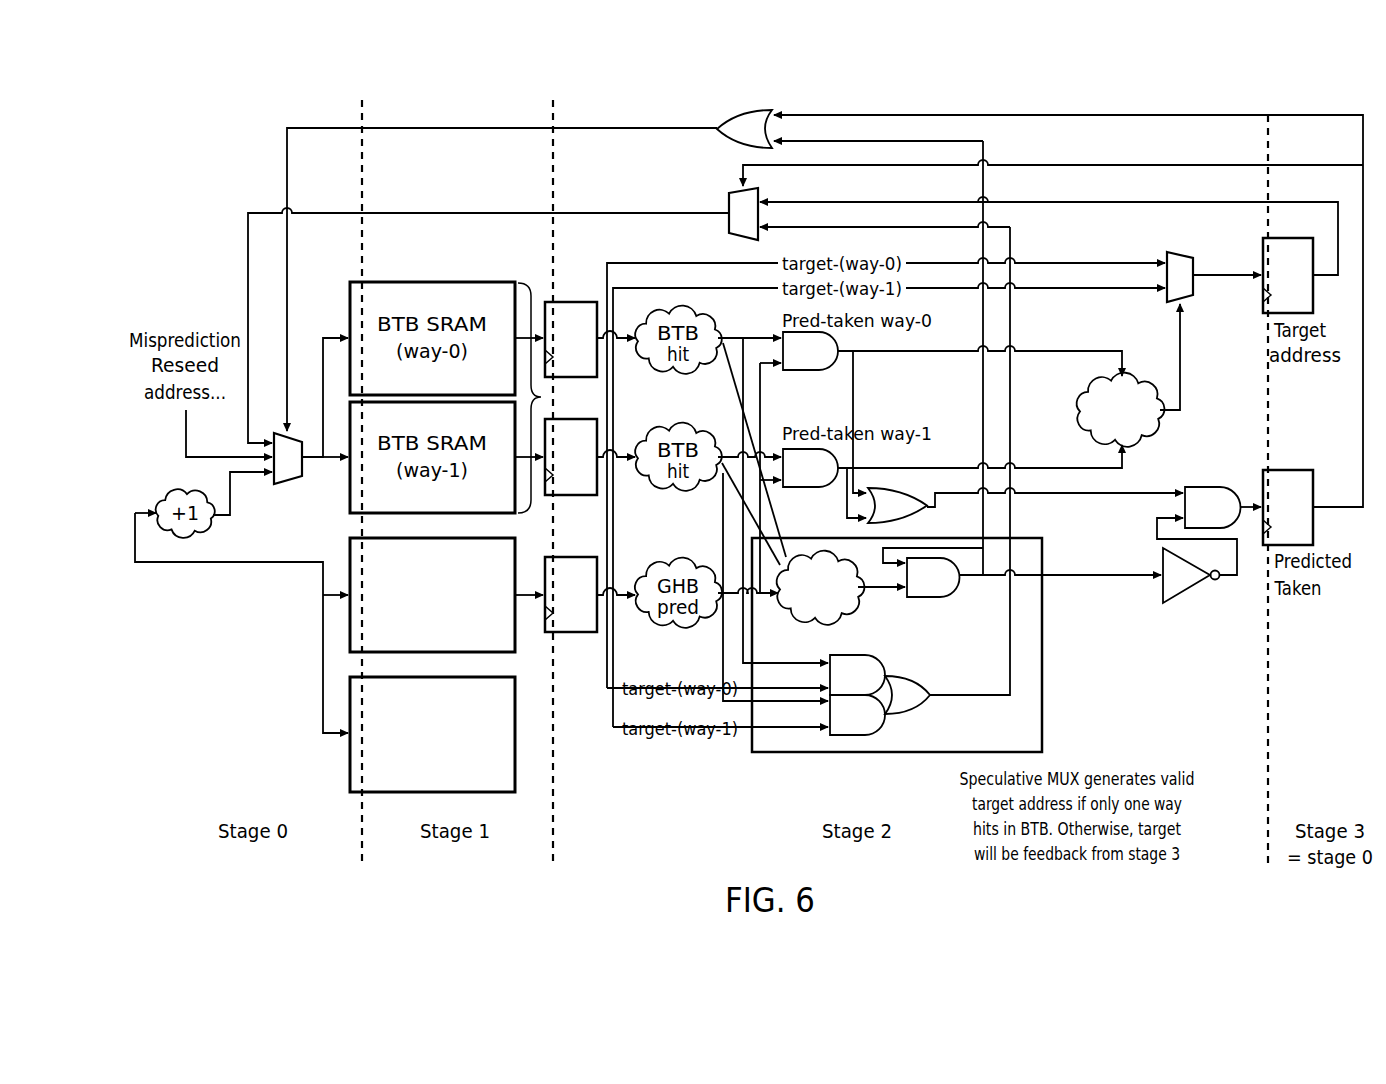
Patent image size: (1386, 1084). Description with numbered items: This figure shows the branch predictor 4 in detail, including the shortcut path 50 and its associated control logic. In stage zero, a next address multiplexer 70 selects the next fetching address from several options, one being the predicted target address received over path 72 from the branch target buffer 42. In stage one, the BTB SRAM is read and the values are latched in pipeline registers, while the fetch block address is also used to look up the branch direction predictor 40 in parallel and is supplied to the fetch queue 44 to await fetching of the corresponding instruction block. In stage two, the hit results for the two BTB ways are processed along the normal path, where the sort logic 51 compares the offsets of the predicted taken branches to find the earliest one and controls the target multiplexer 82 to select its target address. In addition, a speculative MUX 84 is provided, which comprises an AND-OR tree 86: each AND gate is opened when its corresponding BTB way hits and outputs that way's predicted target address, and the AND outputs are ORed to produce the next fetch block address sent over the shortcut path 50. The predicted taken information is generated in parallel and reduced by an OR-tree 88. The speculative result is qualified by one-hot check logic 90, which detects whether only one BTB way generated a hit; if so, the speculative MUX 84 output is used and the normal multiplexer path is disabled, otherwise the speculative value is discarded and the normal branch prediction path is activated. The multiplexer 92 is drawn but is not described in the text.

The branch predictor 4 is at (211, 171).
The branch direction predictor 40 is at (350, 620).
The branch target buffer 42 is at (543, 397).
The fetch queue 44 is at (350, 782).
The shortcut path 50 is at (981, 400).
The sort logic 51 is at (1160, 432).
The next address multiplexer 70 is at (274, 430).
The path 72 is at (447, 128).
The target multiplexer 82 is at (1195, 300).
The speculative MUX 84 is at (884, 669).
The AND-OR tree 86 is at (936, 670).
The OR-tree 88 is at (920, 520).
The one-hot check logic 90 is at (860, 608).
The multiplexer 92 is at (728, 205).